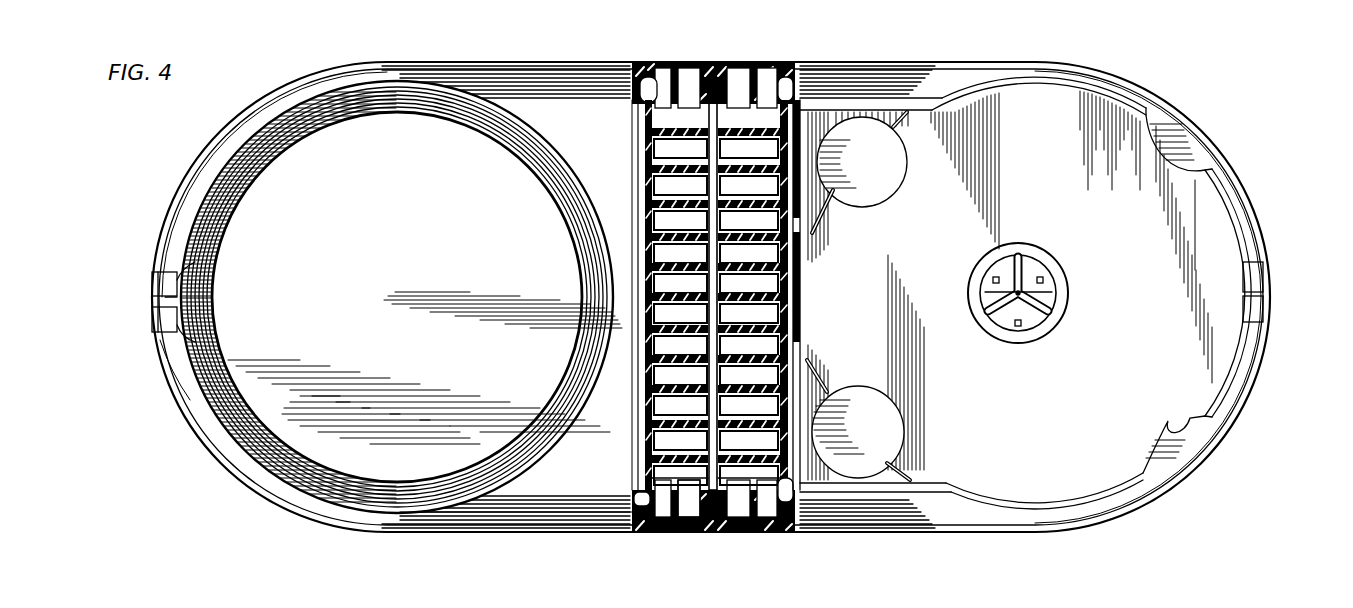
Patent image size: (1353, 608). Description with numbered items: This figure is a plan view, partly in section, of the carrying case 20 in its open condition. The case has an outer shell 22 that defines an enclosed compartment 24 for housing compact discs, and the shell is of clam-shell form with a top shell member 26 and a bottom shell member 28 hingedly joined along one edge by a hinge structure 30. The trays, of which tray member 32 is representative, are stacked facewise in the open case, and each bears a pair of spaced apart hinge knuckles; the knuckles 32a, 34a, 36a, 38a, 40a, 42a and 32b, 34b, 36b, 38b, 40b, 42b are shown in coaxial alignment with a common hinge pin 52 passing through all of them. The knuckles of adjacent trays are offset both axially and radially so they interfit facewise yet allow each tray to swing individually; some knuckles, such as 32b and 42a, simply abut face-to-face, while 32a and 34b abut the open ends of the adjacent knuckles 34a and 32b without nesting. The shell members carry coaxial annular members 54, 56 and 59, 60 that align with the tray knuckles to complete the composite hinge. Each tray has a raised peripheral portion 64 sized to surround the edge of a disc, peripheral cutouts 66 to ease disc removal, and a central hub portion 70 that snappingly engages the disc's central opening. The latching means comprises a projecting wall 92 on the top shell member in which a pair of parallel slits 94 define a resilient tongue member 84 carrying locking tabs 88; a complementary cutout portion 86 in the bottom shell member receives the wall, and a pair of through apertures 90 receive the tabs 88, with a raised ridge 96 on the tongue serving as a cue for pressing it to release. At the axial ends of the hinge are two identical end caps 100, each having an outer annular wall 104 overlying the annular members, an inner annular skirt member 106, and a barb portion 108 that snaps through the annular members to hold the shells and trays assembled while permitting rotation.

The carrying case 20 is at (530, 548).
The outer shell 22 is at (580, 533).
The enclosed compartment 24 is at (403, 486).
The top shell member 26 is at (498, 532).
The bottom shell member 28 is at (925, 533).
The hinge structure 30 is at (803, 272).
The tray member 32 is at (1208, 358).
The hinge knuckle 32a is at (645, 118).
The hinge knuckle 34a is at (648, 150).
The hinge knuckle 36a is at (650, 182).
The hinge knuckle 38a is at (652, 215).
The hinge knuckle 40a is at (656, 246).
The hinge knuckle 42a is at (660, 272).
The hinge knuckle 32b is at (650, 302).
The hinge knuckle 34b is at (650, 332).
The hinge knuckle 36b is at (650, 362).
The hinge knuckle 38b is at (648, 398).
The hinge knuckle 40b is at (642, 442).
The hinge knuckle 42b is at (640, 470).
The hinge pin 52 is at (786, 336).
The annular member 54 is at (822, 458).
The annular member 56 is at (830, 136).
The annular member 59 is at (640, 95).
The annular member 60 is at (1083, 394).
The raised peripheral portion 64 is at (1082, 482).
The peripheral cutout 66 is at (1162, 396).
The central hub portion 70 is at (1046, 283).
The resilient tongue member 84 is at (155, 322).
The cutout portion 86 is at (1262, 215).
The locking tab 88 is at (200, 297).
The through aperture 90 is at (1262, 303).
The projecting wall 92 is at (165, 372).
The slit 94 is at (182, 258).
The raised ridge 96 is at (152, 290).
The end cap 100 is at (758, 62).
The annular wall 104 is at (652, 512).
The annular skirt member 106 is at (700, 520).
The barb portion 108 is at (782, 500).